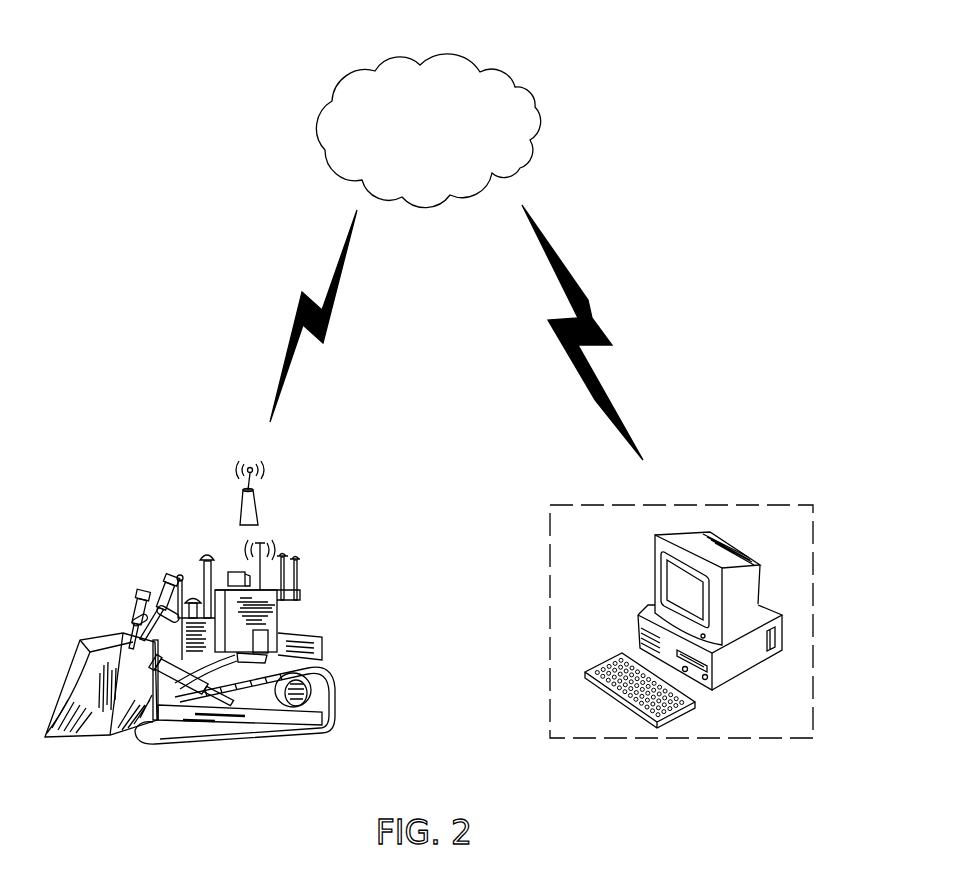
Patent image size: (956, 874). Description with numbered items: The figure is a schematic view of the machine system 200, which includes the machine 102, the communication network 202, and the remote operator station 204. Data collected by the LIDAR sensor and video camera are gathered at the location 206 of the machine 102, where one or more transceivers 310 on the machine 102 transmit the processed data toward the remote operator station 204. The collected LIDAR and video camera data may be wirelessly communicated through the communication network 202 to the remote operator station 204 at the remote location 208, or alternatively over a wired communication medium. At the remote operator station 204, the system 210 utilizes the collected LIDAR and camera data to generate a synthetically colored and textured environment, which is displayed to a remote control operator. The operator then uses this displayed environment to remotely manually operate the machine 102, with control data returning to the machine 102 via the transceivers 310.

The machine system 200 is at (282, 48).
The communication network 202 is at (445, 163).
The remote operator station 204 is at (752, 740).
The location 206 is at (155, 523).
The remote location 208 is at (711, 457).
The system 210 is at (600, 677).
The machine 102 is at (250, 744).
The transceiver 310 is at (258, 500).